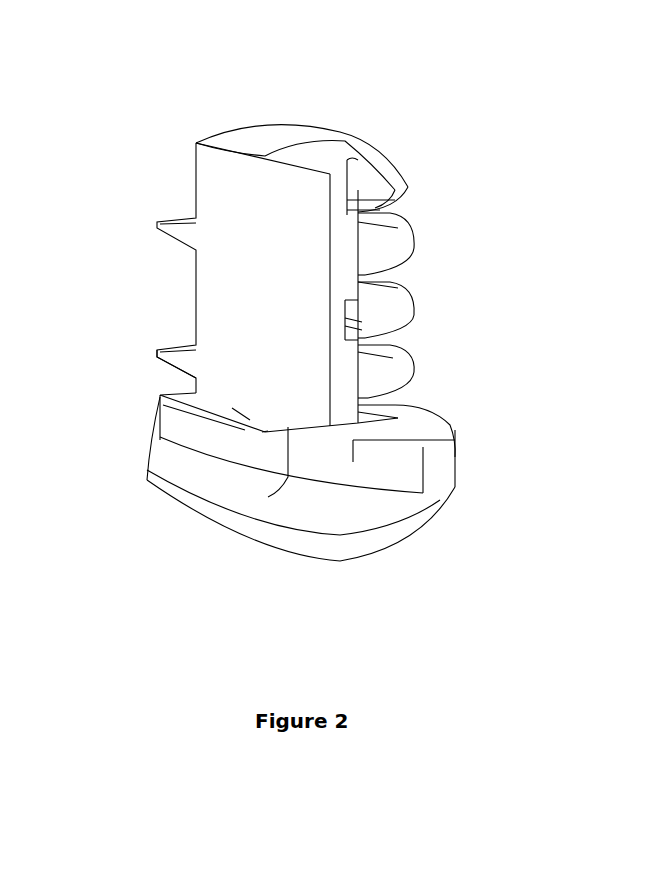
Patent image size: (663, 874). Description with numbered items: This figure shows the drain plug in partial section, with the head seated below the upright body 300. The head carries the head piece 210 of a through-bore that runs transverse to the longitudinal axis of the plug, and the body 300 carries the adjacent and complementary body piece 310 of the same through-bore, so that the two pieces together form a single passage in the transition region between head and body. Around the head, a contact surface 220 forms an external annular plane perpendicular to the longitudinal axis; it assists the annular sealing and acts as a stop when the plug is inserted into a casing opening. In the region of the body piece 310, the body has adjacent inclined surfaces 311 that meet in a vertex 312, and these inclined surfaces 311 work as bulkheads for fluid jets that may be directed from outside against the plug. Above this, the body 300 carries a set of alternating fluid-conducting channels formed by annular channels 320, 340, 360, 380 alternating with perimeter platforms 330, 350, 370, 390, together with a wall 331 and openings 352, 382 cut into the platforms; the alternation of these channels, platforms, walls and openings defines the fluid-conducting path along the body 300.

The head piece 210 is at (398, 517).
The contact surface 220 is at (395, 443).
The body 300 is at (212, 172).
The body piece 310 is at (178, 418).
The inclined surfaces 311 is at (240, 413).
The vertex 312 is at (265, 433).
The annular channel 320 is at (398, 418).
The perimeter platform 330 is at (417, 380).
The wall 331 is at (198, 374).
The annular channel 340 is at (393, 358).
The perimeter platform 350 is at (414, 322).
The opening 352 is at (352, 331).
The annular channel 360 is at (398, 288).
The perimeter platform 370 is at (405, 257).
The annular channel 380 is at (398, 228).
The opening 382 is at (345, 187).
The perimeter platform 390 is at (413, 187).